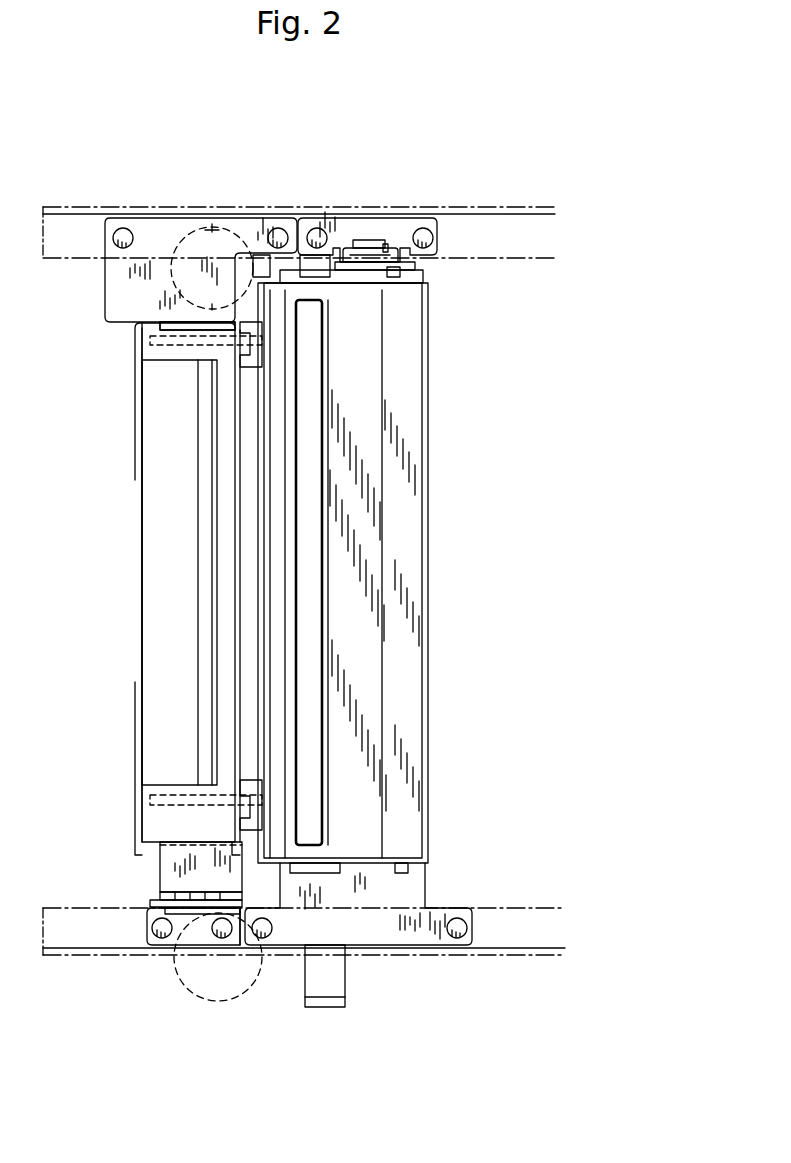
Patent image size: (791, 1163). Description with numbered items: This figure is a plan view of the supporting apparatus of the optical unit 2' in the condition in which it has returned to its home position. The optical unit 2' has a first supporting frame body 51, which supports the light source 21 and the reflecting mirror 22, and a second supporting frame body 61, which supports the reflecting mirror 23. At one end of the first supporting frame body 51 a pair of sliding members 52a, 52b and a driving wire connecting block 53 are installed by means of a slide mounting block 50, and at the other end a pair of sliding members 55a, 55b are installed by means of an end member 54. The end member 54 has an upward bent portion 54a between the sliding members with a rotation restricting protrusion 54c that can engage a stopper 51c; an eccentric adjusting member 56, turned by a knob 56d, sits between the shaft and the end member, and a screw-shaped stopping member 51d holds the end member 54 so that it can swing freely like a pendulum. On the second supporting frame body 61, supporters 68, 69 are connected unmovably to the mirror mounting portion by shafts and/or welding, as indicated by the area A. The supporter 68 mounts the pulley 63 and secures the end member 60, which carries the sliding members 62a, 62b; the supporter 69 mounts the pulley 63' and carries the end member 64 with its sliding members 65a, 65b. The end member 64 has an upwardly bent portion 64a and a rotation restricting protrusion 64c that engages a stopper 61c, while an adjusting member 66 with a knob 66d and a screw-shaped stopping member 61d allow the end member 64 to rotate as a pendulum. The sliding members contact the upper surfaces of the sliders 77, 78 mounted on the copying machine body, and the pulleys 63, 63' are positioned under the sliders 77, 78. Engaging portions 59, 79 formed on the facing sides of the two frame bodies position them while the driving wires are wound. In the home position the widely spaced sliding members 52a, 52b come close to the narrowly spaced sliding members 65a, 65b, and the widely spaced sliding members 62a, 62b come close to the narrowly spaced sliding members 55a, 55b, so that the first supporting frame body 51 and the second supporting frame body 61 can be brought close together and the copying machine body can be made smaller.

The optical unit 2' is at (562, 430).
The light source 21 is at (407, 887).
The reflecting mirror 22 is at (318, 874).
The reflecting mirror 23 is at (150, 571).
The slide mounting block 50 is at (362, 933).
The first supporting frame body 51 is at (424, 547).
The stopper 51c is at (316, 252).
The screw-shaped stopping member 51d is at (370, 242).
The sliding member 52a is at (459, 939).
The sliding member 52b is at (265, 939).
The driving wire connecting block 53 is at (325, 992).
The end member 54 is at (378, 226).
The upward bent portion 54a is at (388, 240).
The rotation restricting protrusion 54c is at (366, 266).
The sliding member 55a is at (427, 235).
The sliding member 55b is at (320, 232).
The adjusting member 56 is at (360, 246).
The knob 56d is at (386, 244).
The engaging portion 59 is at (250, 347).
The end member 60 is at (165, 216).
The second supporting frame body 61 is at (135, 456).
The stopper 61c is at (237, 906).
The screw-shaped stopping member 61d is at (185, 919).
The sliding member 62a is at (278, 228).
The sliding member 62b is at (123, 228).
The pulley 63 is at (212, 234).
The pulley 63' is at (223, 1001).
The end member 64 is at (198, 936).
The upwardly bent portion 64a is at (150, 903).
The rotation restricting protrusion 64c is at (247, 911).
The sliding member 65a is at (220, 939).
The sliding member 65b is at (157, 939).
The adjusting member 66 is at (165, 894).
The knob 66d is at (190, 901).
The supporter 68 is at (172, 328).
The supporter 69 is at (160, 861).
The slider 77 is at (105, 950).
The slider 78 is at (545, 200).
The engaging portion 79 is at (262, 339).
The area A is at (123, 444).